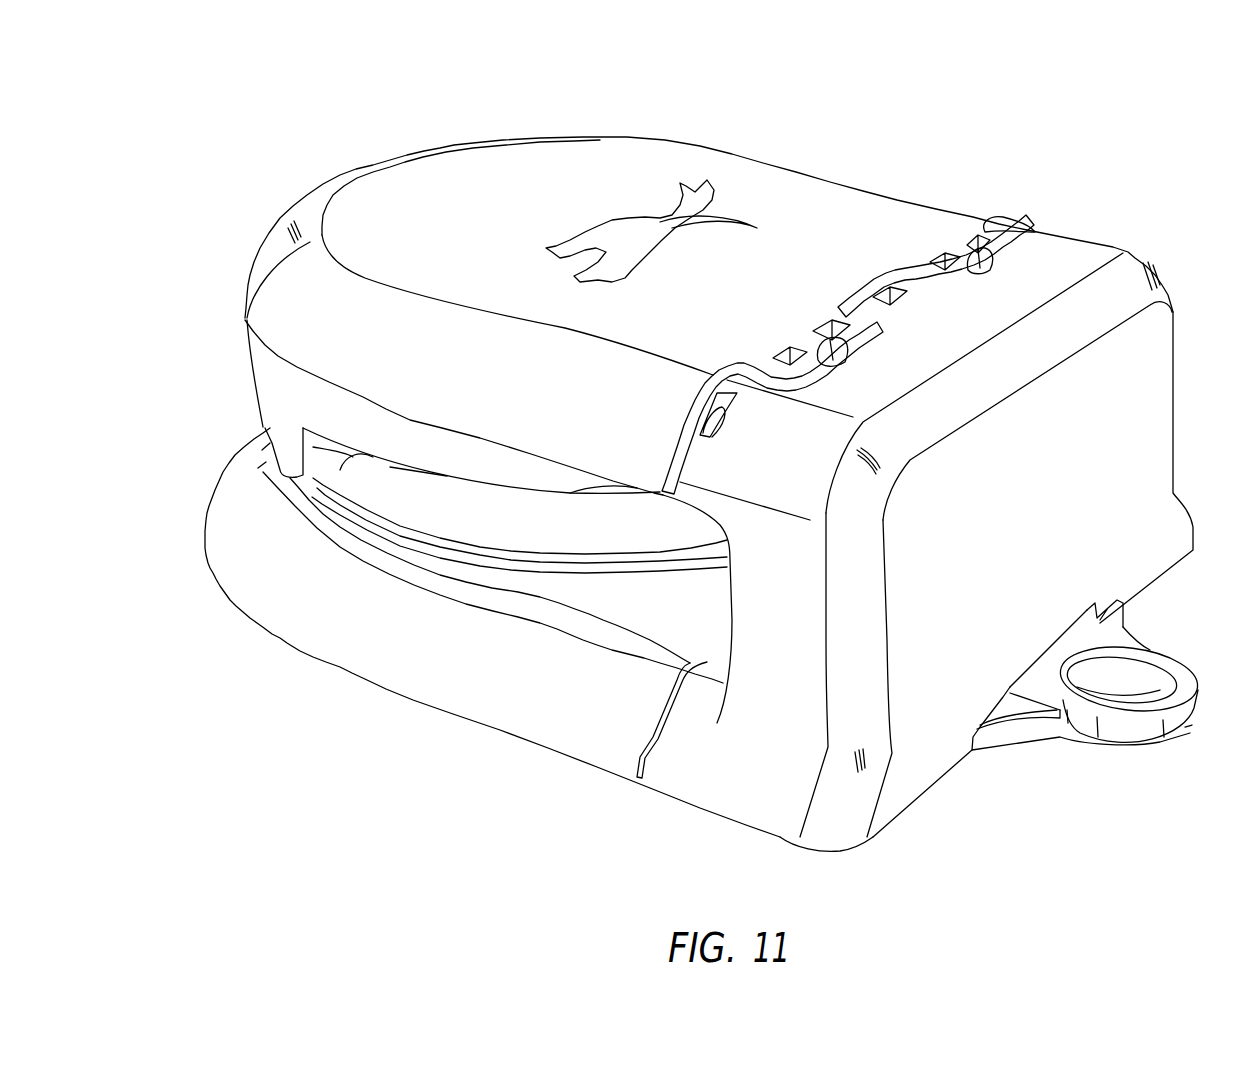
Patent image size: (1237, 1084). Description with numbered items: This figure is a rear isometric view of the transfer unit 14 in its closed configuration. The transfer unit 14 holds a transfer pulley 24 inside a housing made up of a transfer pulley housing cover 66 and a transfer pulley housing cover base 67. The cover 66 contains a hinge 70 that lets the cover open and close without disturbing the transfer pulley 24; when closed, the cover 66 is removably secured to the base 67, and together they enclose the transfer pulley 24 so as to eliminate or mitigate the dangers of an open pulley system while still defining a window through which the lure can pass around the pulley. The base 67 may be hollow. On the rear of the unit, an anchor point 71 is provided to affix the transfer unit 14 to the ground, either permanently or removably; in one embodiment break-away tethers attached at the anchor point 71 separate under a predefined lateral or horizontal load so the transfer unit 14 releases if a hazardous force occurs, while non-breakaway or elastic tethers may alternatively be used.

The transfer unit 14 is at (985, 120).
The transfer pulley 24 is at (483, 523).
The transfer pulley housing cover 66 is at (398, 213).
The transfer pulley housing cover base 67 is at (340, 607).
The hinge 70 is at (1012, 230).
The anchor point 71 is at (1132, 673).